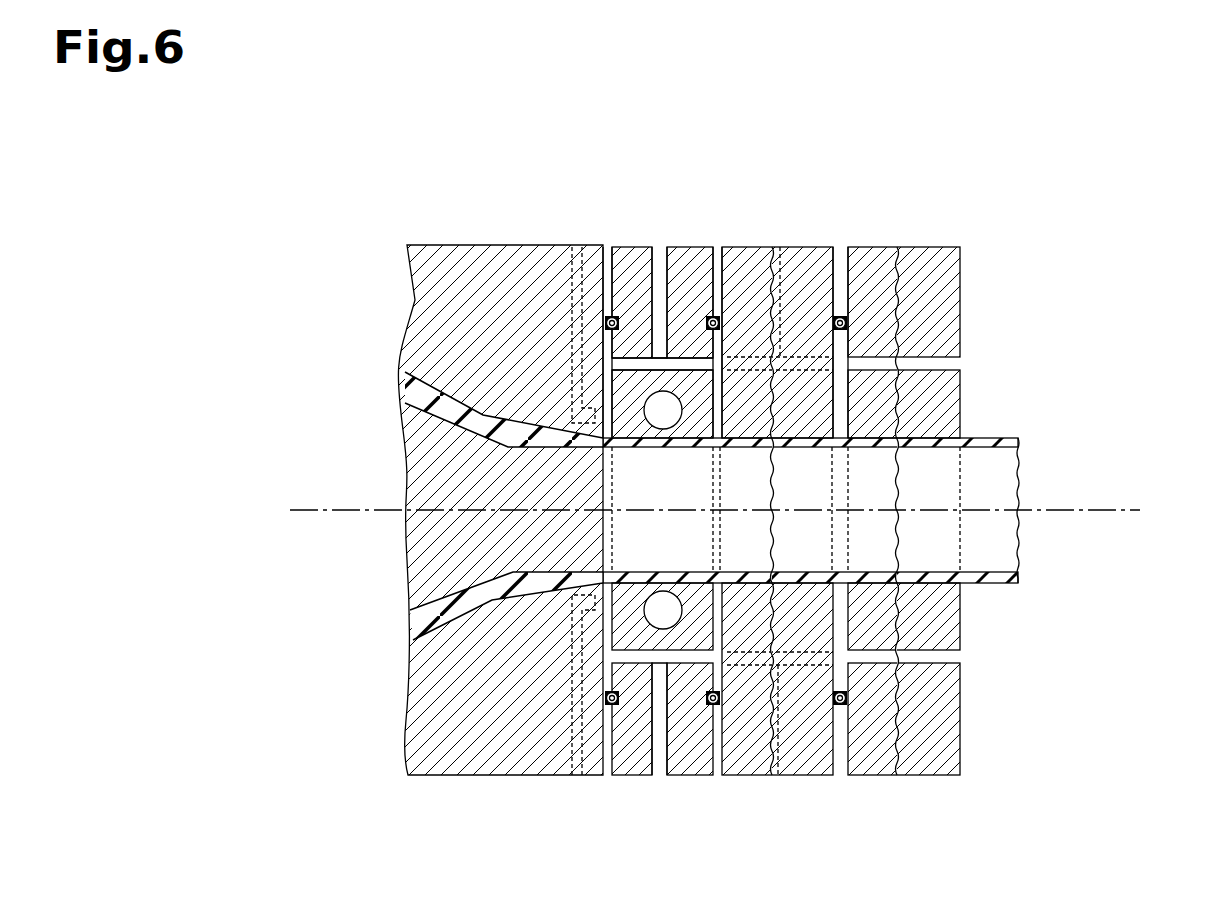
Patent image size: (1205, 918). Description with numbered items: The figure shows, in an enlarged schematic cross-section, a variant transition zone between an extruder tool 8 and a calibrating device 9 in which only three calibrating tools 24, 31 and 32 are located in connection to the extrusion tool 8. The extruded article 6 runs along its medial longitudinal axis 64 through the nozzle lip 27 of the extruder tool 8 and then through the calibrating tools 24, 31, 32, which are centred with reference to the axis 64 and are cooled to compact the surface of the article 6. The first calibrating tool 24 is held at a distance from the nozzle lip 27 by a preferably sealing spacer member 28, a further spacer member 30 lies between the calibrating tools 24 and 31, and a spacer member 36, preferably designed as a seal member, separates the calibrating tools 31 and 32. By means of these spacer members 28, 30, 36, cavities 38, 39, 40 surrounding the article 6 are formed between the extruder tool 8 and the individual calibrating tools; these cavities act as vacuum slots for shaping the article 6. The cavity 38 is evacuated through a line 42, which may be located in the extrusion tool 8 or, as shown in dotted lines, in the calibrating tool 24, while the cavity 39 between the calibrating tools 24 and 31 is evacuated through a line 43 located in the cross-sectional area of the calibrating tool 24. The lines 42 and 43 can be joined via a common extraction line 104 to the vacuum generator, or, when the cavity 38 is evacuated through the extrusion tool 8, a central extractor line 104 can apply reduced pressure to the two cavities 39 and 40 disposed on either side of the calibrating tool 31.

The article 6 is at (982, 538).
The extruder tool 8 is at (467, 327).
The calibrating device 9 is at (1000, 170).
The calibrating tool 24 is at (637, 745).
The nozzle lip 27 is at (593, 493).
The spacer member 28 is at (587, 720).
The spacer member 30 is at (702, 713).
The calibrating tool 31 is at (747, 747).
The calibrating tool 32 is at (870, 747).
The spacer member 36 is at (828, 715).
The cavity 38 is at (608, 377).
The cavity 39 is at (718, 387).
The cavity 40 is at (838, 363).
The line 42 is at (568, 245).
The line 43 is at (685, 362).
The medial longitudinal axis 64 is at (1072, 510).
The extraction line 104 is at (657, 280).